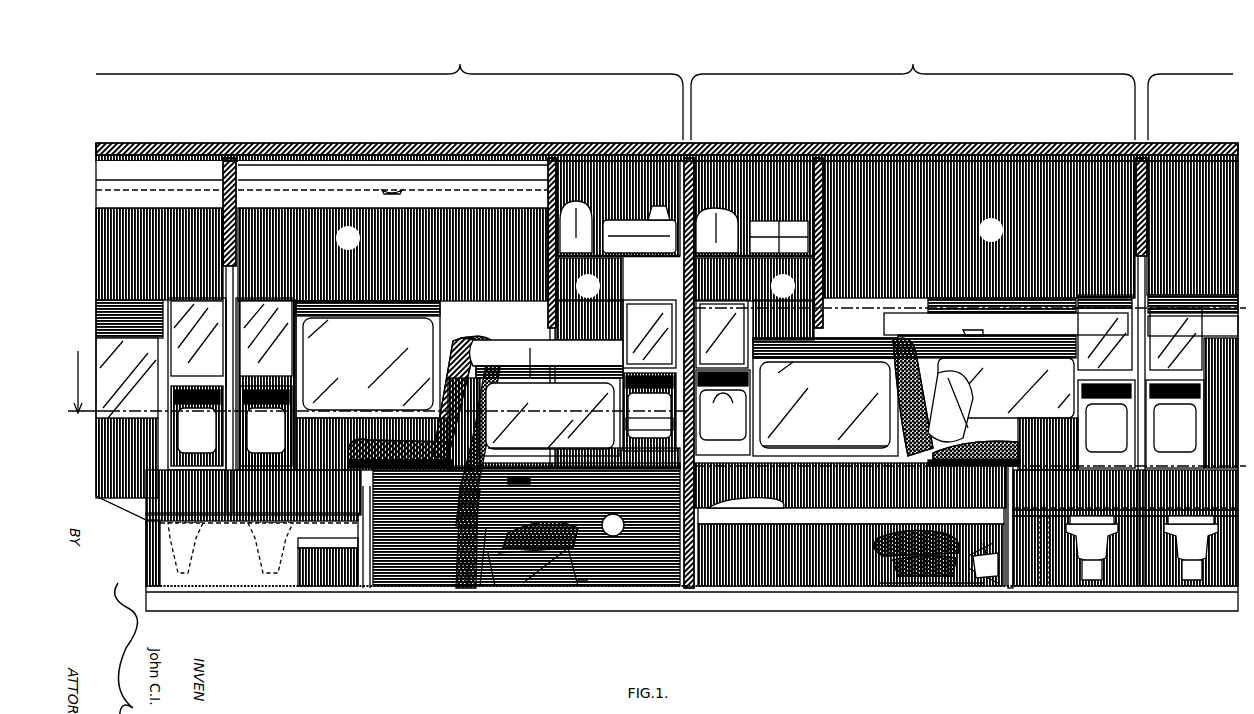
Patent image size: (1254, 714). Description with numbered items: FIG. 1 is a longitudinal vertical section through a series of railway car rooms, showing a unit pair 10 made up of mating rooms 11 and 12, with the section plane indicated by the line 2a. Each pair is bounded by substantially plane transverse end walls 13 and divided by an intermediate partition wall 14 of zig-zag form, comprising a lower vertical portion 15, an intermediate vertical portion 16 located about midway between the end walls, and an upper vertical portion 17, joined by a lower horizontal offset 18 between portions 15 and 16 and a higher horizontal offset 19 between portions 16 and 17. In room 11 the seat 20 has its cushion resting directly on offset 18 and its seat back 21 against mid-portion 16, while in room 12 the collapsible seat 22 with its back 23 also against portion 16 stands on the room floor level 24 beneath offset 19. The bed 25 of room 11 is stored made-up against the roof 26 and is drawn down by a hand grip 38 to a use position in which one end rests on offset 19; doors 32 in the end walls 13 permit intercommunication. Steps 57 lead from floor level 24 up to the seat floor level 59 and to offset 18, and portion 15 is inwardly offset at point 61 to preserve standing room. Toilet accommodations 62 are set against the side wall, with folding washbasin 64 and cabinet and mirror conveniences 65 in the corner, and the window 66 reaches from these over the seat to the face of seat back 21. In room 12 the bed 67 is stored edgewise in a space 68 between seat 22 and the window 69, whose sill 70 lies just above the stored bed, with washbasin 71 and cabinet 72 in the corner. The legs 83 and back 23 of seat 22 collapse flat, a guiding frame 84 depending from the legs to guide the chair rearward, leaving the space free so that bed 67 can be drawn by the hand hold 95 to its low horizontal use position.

The pair of rooms 10 is at (664, 87).
The room 11 is at (667, 338).
The room 12 is at (685, 286).
The end wall 13 is at (232, 162).
The intermediate partition wall 14 is at (552, 165).
The lower vertical portion 15 is at (385, 548).
The intermediate vertical portion 16 is at (470, 383).
The upper vertical portion 17 is at (552, 240).
The lower horizontal offset 18 is at (688, 525).
The upper horizontal offset 19 is at (522, 345).
The seat 20 is at (355, 432).
The seat back 21 is at (445, 355).
The seat 22 is at (535, 535).
The seat back 23 is at (495, 484).
The room floor level 24 is at (435, 578).
The bed 25 is at (96, 189).
The roof 26 is at (424, 146).
The door 32 is at (226, 305).
The hand grip 38 is at (388, 182).
The steps 57 is at (305, 505).
The seat floor level 59 is at (240, 530).
The inward offset point 61 is at (328, 580).
The toilet accommodations 62 is at (170, 565).
The folding washbasin accommodations 64 is at (175, 420).
The cabinet and mirror conveniences 65 is at (200, 310).
The window 66 is at (586, 358).
The bed 67 is at (688, 524).
The storage space 68 is at (462, 565).
The window 69 is at (688, 407).
The window sill 70 is at (688, 440).
The washbasin accommodations 71 is at (620, 412).
The cabinet accommodations 72 is at (618, 383).
The legs 83 is at (575, 568).
The guiding frame 84 is at (875, 575).
The operating hand hold 95 is at (508, 468).
The section line 2a is at (657, 364).